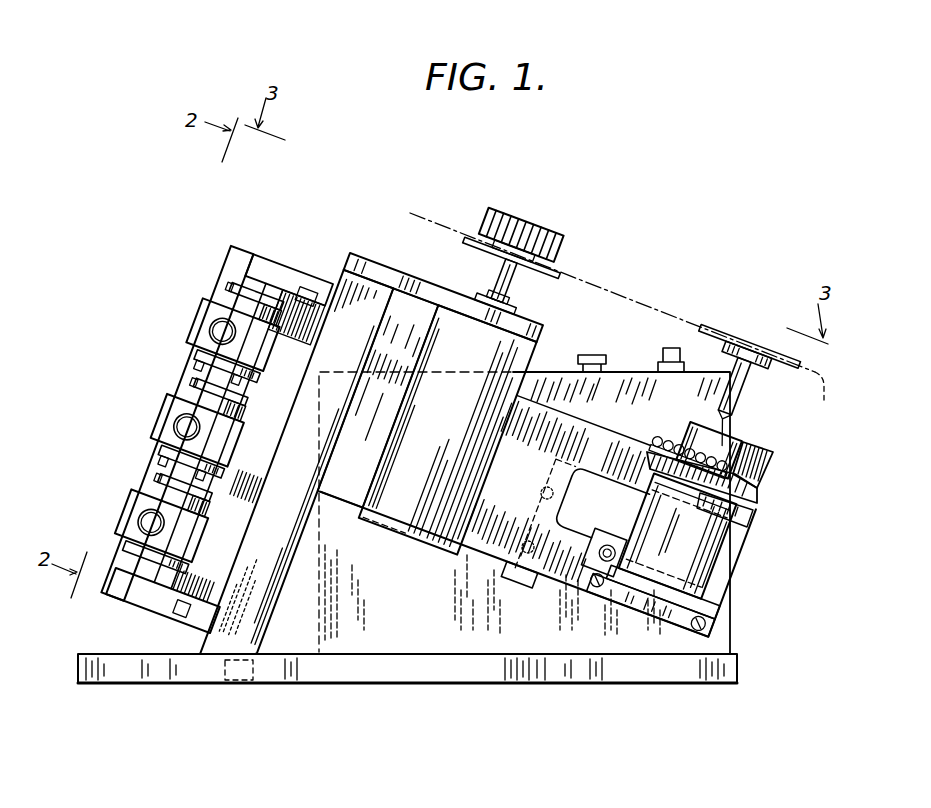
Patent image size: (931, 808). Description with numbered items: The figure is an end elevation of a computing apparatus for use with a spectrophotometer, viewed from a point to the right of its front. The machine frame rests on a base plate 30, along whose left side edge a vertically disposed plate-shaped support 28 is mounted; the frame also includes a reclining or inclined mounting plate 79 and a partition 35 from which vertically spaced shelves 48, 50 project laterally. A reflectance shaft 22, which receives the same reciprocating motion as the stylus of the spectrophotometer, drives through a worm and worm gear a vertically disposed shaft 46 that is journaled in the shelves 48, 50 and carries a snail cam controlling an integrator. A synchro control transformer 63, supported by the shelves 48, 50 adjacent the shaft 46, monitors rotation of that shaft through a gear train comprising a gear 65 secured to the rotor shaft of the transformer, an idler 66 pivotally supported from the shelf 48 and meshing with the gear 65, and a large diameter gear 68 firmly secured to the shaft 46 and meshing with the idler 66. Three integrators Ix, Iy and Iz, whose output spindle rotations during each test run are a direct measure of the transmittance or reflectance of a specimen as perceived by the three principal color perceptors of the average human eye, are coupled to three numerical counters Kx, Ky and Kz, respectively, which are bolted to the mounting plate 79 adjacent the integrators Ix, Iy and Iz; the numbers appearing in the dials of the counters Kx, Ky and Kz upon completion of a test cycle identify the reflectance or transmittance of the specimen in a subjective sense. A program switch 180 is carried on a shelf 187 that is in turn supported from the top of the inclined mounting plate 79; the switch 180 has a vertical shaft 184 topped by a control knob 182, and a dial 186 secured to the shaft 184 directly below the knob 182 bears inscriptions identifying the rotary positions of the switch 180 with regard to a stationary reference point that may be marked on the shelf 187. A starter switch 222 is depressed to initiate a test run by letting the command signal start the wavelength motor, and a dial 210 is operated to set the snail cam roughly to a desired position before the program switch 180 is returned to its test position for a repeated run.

The reflectance shaft 22 is at (607, 544).
The plate-shaped support 28 is at (403, 642).
The base plate 30 is at (484, 676).
The partition 35 is at (585, 423).
The vertically disposed shaft 46 is at (745, 378).
The shelf 48 is at (748, 492).
The shelf 50 is at (707, 618).
The synchro control transformer 63 is at (716, 559).
The gear 65 is at (735, 458).
The idler 66 is at (661, 440).
The large diameter gear 68 is at (750, 468).
The inclined mounting plate 79 is at (262, 628).
The program switch 180 is at (524, 361).
The control knob 182 is at (558, 245).
The vertical shaft 184 is at (512, 281).
The dial 186 is at (558, 278).
The shelf 187 is at (425, 292).
The dial 210 is at (722, 340).
The starter switch 222 is at (667, 356).
The integrator Ix is at (236, 295).
The numerical counter Kx is at (214, 313).
The integrator Iy is at (207, 396).
The numerical counter Ky is at (171, 427).
The integrator Iz is at (171, 497).
The numerical counter Kz is at (136, 515).